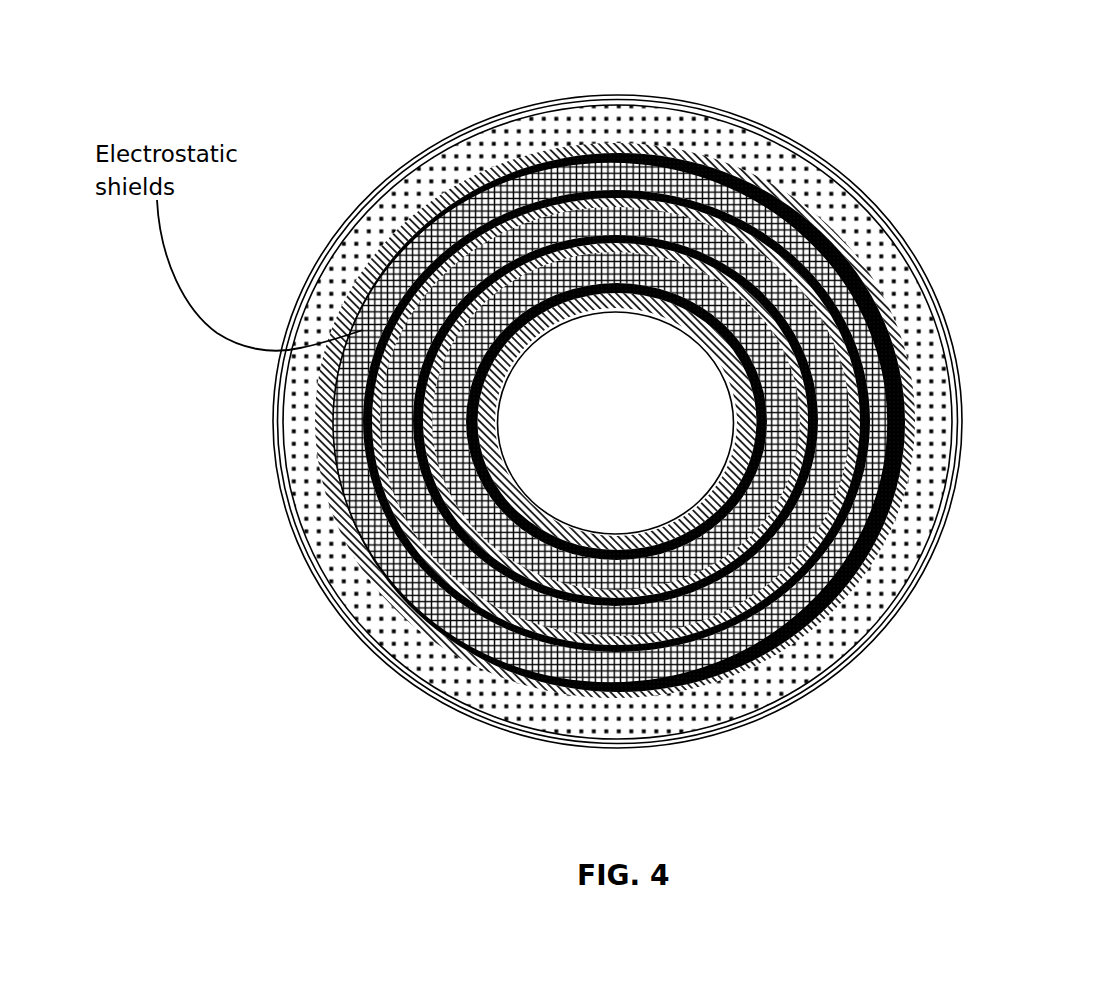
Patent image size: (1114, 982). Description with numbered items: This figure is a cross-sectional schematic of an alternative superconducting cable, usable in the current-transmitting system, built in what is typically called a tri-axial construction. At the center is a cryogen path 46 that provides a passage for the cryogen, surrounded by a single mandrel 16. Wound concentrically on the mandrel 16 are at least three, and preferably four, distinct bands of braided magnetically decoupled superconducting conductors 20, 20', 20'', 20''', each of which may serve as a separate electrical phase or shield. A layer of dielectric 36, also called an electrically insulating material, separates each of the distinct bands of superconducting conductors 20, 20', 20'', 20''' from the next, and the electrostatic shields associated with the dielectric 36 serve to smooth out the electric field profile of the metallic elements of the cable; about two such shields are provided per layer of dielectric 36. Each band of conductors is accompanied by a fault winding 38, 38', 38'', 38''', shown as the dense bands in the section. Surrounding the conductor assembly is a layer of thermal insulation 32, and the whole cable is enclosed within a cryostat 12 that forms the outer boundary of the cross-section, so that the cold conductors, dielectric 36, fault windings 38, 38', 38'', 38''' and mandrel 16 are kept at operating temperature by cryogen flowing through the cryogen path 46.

The cryostat 12 is at (407, 670).
The mandrel 16 is at (508, 470).
The magnetically decoupled superconducting conductors 20 is at (615, 377).
The magnetically decoupled superconducting conductors 20' is at (616, 345).
The magnetically decoupled superconducting conductors 20'' is at (617, 291).
The magnetically decoupled superconducting conductors 20''' is at (615, 318).
The thermal insulation 32 is at (572, 712).
The dielectric 36 is at (855, 398).
The fault winding 38 is at (676, 308).
The fault winding 38' is at (701, 341).
The fault winding 38'' is at (707, 387).
The fault winding 38''' is at (722, 422).
The cryogen path 46 is at (640, 438).